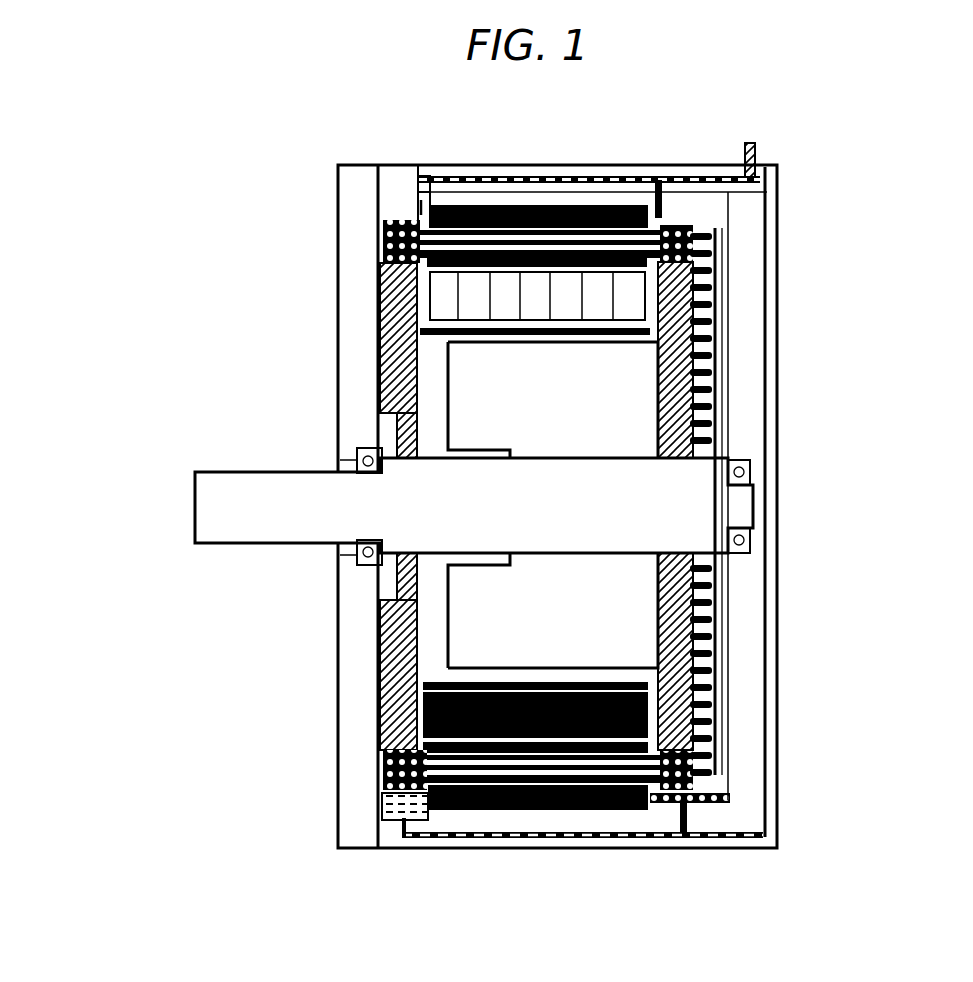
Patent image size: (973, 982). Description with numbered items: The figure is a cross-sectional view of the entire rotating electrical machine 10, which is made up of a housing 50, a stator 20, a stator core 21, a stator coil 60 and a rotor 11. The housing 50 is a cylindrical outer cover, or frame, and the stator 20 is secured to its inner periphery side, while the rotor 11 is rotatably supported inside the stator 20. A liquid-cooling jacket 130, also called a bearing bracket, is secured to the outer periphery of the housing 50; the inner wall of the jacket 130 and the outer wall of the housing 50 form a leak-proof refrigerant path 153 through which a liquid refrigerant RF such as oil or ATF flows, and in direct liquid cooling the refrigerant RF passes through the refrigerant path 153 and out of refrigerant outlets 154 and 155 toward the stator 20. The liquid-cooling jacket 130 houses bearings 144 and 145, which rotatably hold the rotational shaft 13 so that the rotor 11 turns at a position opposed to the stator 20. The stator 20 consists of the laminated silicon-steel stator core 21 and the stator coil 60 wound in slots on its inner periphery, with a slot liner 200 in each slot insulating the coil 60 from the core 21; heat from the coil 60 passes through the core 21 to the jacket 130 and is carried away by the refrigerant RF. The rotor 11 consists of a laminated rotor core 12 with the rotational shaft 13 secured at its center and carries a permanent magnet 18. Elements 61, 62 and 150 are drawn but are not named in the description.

The rotating electrical machine 10 is at (178, 376).
The rotor 11 is at (440, 415).
The rotor core 12 is at (405, 692).
The rotational shaft 13 is at (222, 493).
The permanent magnet 18 is at (448, 295).
The stator 20 is at (387, 748).
The stator core 21 is at (537, 207).
The housing 50 is at (622, 193).
The stator coil 60 is at (452, 207).
The left end bracket 61 is at (383, 328).
The right end bracket 62 is at (700, 293).
The liquid-cooling jacket 130 is at (777, 848).
The bearing 144 is at (380, 560).
The bearing 145 is at (747, 545).
The bottom support 150 is at (383, 800).
The refrigerant path 153 is at (440, 176).
The refrigerant outlet 154 is at (417, 182).
The refrigerant outlet 155 is at (773, 192).
The slot liner 200 is at (717, 607).
The liquid refrigerant RF is at (415, 208).